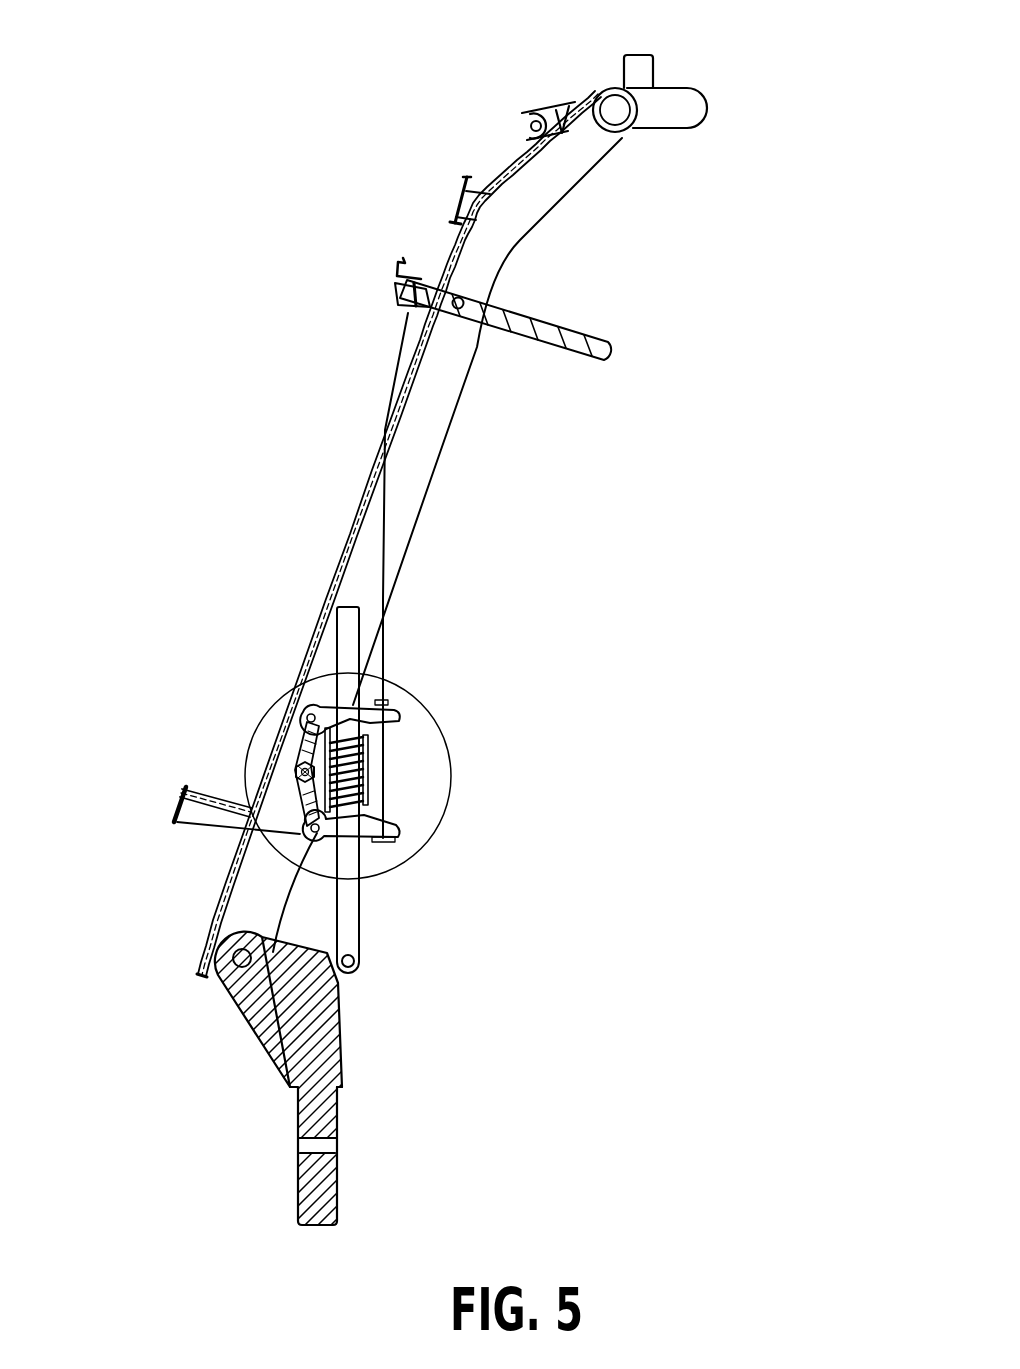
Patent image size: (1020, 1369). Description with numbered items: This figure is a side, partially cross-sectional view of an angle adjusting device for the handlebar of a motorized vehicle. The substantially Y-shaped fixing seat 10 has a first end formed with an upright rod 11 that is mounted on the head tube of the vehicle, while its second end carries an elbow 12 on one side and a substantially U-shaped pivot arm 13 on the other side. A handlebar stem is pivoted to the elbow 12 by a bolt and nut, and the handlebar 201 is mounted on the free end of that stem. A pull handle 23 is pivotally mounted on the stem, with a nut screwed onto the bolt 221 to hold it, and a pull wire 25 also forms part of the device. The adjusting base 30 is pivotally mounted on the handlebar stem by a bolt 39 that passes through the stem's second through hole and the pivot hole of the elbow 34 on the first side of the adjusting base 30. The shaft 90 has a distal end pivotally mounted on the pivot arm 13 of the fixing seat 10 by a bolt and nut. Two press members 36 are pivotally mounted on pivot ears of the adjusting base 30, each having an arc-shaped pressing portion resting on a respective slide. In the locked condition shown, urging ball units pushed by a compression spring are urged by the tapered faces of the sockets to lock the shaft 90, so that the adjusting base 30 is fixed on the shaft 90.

The fixing seat 10 is at (243, 1112).
The upright rod 11 is at (310, 1188).
The elbow 12 is at (210, 952).
The pivot arm 13 is at (347, 977).
The pull handle 23 is at (545, 330).
The pull wire 25 is at (400, 350).
The adjusting base 30 is at (313, 752).
The elbow 34 is at (303, 772).
The press members 36 is at (352, 717).
The bolt 39 is at (303, 775).
The shaft 90 is at (350, 905).
The handlebar 201 is at (673, 86).
The bolt 221 is at (458, 310).